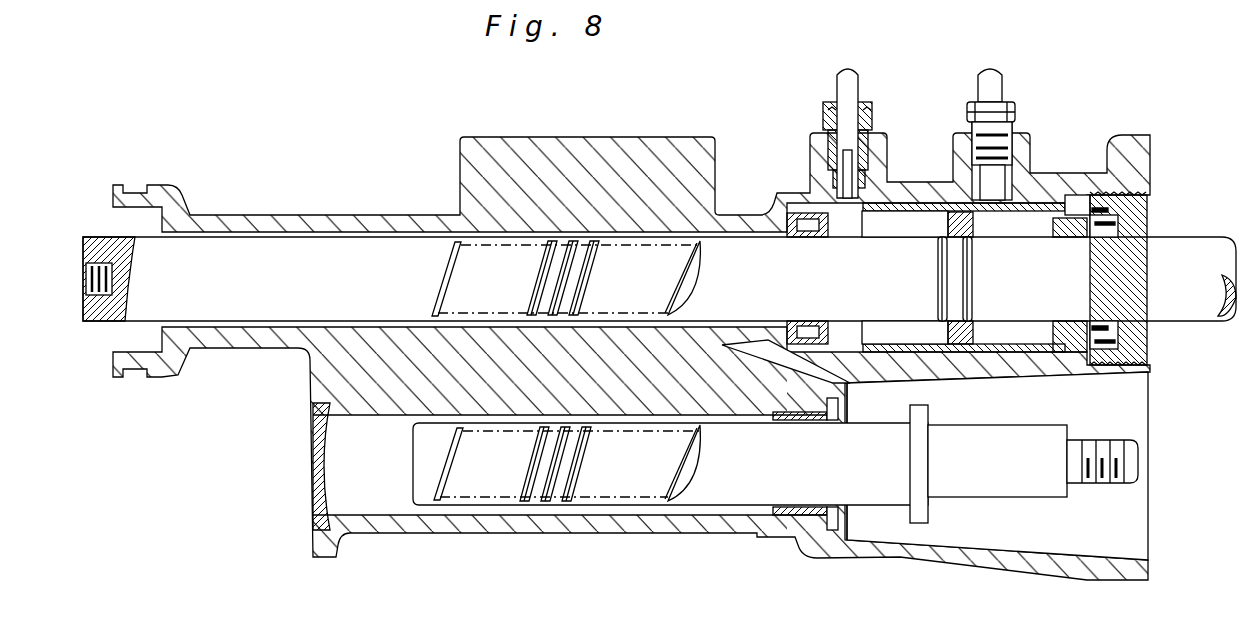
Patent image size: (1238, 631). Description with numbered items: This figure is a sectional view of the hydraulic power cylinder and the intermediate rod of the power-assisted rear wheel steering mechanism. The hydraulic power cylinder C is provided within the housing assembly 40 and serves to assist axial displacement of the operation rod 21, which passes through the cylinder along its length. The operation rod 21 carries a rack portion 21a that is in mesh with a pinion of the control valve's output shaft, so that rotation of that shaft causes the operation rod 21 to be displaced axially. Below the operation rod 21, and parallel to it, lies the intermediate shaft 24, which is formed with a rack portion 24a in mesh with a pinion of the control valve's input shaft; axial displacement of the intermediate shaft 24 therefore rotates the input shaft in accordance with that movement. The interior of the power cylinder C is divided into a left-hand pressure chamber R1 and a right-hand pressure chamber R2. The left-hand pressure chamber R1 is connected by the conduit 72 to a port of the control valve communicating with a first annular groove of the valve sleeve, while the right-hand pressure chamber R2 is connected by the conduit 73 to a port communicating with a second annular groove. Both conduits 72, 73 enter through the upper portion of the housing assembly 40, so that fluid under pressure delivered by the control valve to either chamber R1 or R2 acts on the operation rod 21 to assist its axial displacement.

The housing assembly 40 is at (465, 152).
The hydraulic power cylinder C is at (1033, 173).
The left-hand pressure chamber R1 is at (908, 206).
The right-hand pressure chamber R2 is at (1017, 225).
The operation rod 21 is at (1207, 237).
The rack portion of operation rod 21a is at (543, 283).
The conduit 72 is at (856, 82).
The conduit 73 is at (1004, 82).
The intermediate shaft 24 is at (991, 485).
The rack portion of intermediate shaft 24a is at (545, 464).